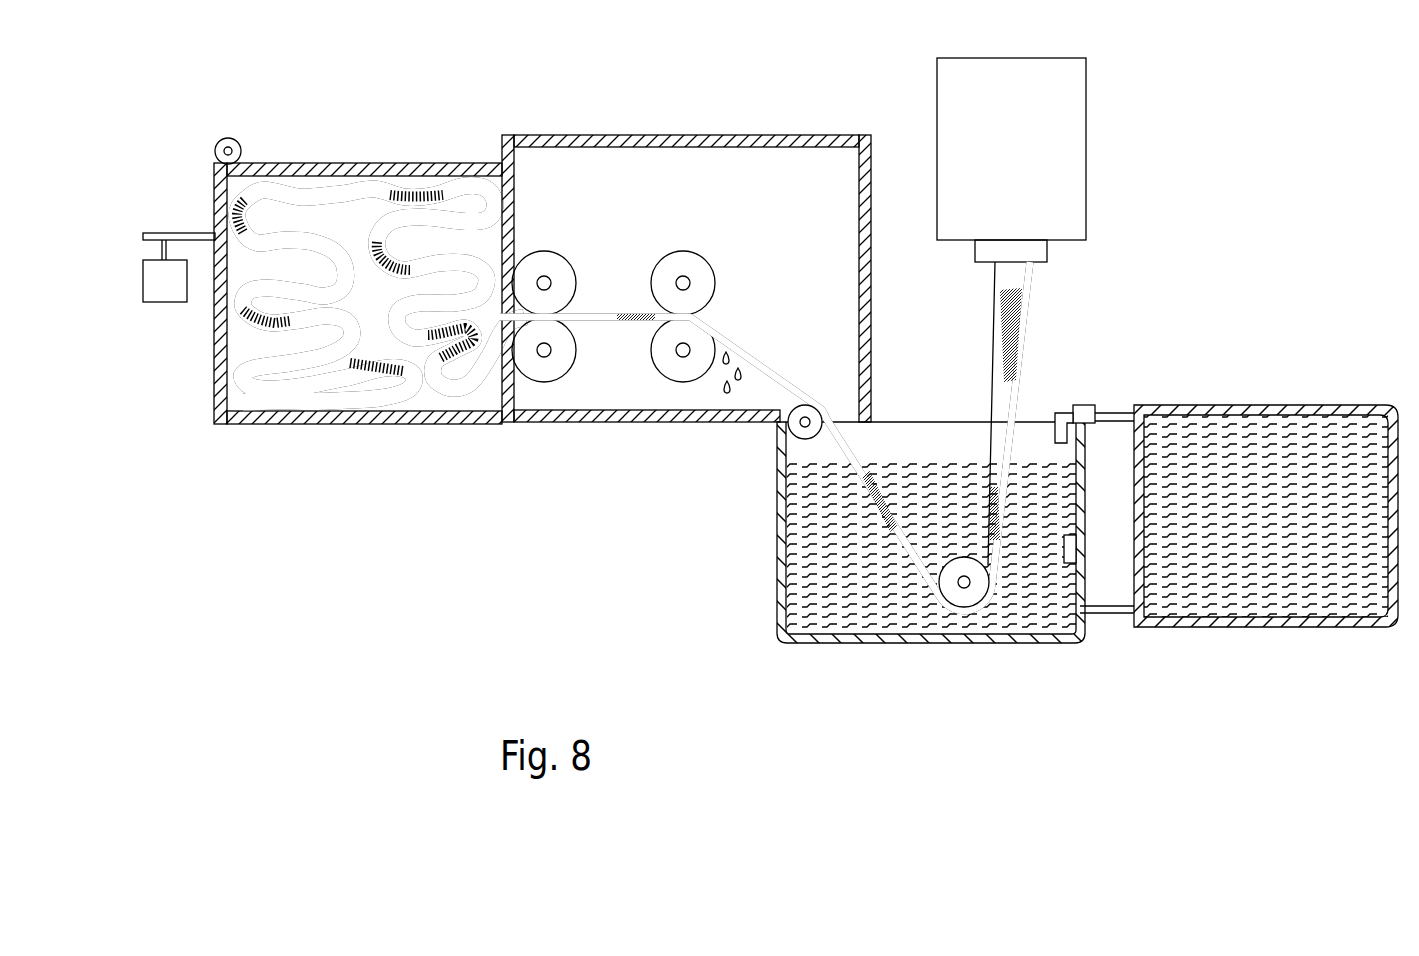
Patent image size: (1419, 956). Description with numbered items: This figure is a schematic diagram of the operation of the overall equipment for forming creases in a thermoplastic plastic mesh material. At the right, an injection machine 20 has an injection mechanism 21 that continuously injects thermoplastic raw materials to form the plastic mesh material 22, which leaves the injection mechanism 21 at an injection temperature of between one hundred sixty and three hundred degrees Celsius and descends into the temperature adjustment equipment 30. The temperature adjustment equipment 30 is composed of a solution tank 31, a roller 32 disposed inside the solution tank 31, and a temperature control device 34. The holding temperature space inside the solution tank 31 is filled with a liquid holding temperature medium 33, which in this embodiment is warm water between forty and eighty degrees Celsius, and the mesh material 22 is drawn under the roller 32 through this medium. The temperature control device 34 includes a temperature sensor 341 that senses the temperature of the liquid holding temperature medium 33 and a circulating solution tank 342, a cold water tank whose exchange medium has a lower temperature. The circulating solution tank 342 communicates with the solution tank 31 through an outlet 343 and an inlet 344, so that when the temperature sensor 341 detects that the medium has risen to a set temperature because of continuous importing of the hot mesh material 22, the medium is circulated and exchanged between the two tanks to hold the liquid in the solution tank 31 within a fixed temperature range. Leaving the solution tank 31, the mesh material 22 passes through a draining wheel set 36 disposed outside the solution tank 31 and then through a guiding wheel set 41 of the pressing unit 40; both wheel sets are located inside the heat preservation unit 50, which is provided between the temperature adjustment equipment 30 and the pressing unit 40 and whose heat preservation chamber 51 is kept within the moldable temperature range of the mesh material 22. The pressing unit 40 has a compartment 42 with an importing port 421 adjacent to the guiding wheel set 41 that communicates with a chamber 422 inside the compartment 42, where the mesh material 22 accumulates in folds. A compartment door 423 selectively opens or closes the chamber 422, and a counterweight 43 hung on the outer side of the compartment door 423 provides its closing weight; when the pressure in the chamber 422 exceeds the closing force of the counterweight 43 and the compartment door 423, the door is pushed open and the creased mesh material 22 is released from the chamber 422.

The injection machine 20 is at (1072, 166).
The injection mechanism 21 is at (1033, 252).
The plastic mesh material 22 is at (323, 380).
The temperature adjustment equipment 30 is at (713, 524).
The solution tank 31 is at (840, 643).
The roller 32 is at (958, 600).
The liquid holding temperature medium 33 is at (820, 593).
The temperature control device 34 is at (1226, 505).
The temperature sensor 341 is at (1070, 550).
The circulating solution tank 342 is at (1312, 408).
The outlet 343 is at (1113, 618).
The inlet 344 is at (1090, 407).
The draining wheel set 36 is at (683, 383).
The pressing unit 40 is at (299, 285).
The guiding wheel set 41 is at (545, 250).
The compartment 42 is at (385, 420).
The importing port 421 is at (462, 390).
The chamber 422 is at (318, 186).
The compartment door 423 is at (217, 353).
The counterweight 43 is at (155, 278).
The heat preservation unit 50 is at (686, 267).
The heat preservation chamber 51 is at (674, 190).